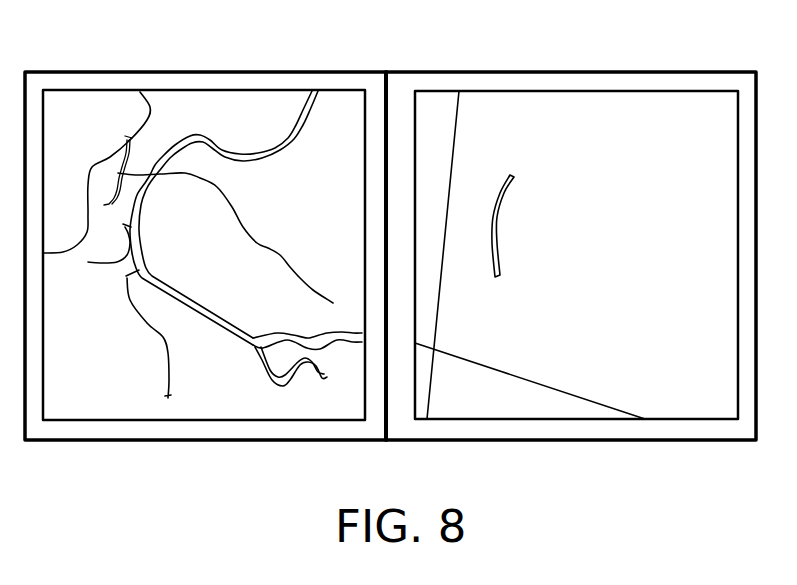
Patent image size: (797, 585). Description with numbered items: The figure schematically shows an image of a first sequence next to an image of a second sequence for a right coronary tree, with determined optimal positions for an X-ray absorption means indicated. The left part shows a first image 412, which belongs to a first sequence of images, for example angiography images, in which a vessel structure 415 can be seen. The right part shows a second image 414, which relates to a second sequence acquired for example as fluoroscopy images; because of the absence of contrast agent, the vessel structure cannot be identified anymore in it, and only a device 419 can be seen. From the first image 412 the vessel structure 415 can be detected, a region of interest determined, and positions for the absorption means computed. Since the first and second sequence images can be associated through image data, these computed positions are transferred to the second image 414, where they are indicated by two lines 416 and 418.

The first image 412 is at (85, 107).
The second image 414 is at (685, 142).
The vessel structure 415 is at (201, 140).
The line 416 is at (530, 382).
The line 418 is at (456, 120).
The device 419 is at (497, 247).